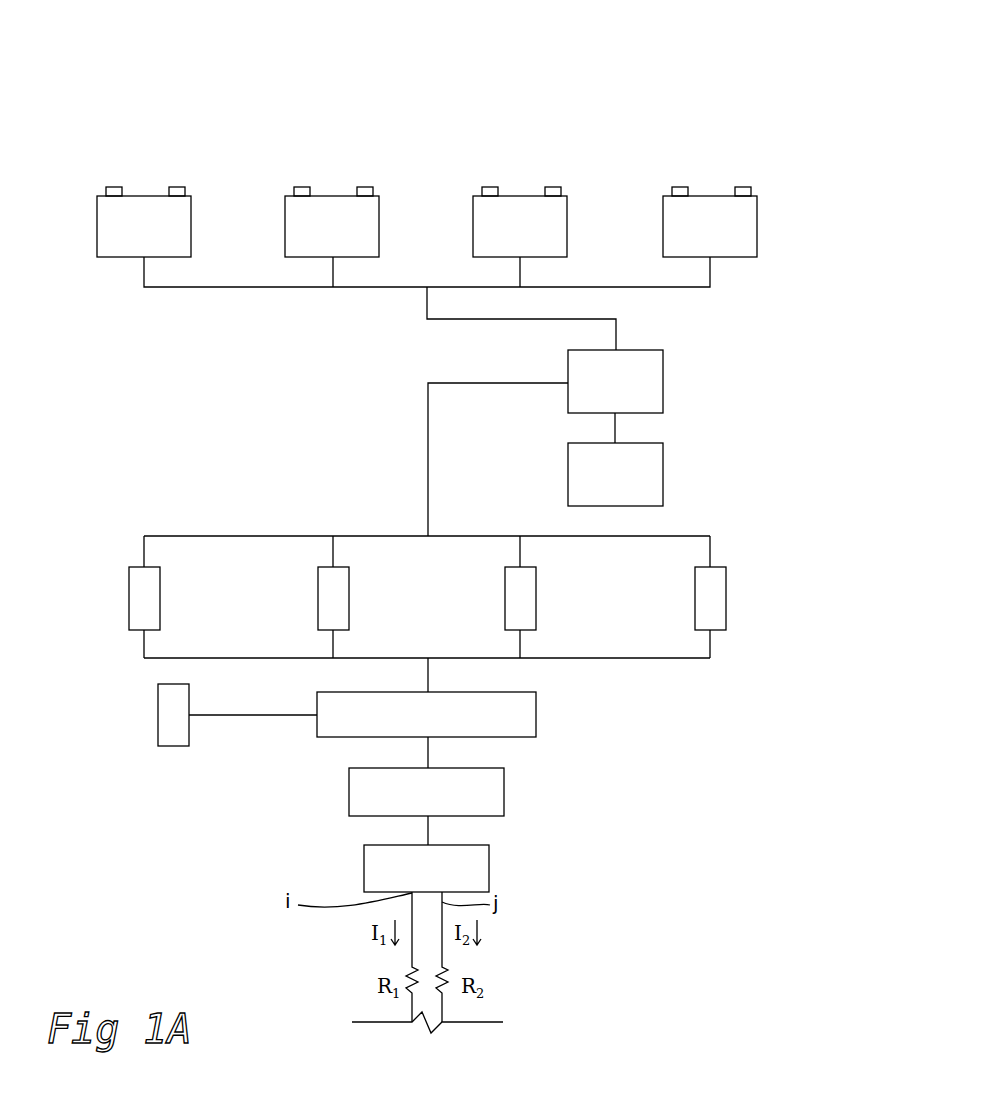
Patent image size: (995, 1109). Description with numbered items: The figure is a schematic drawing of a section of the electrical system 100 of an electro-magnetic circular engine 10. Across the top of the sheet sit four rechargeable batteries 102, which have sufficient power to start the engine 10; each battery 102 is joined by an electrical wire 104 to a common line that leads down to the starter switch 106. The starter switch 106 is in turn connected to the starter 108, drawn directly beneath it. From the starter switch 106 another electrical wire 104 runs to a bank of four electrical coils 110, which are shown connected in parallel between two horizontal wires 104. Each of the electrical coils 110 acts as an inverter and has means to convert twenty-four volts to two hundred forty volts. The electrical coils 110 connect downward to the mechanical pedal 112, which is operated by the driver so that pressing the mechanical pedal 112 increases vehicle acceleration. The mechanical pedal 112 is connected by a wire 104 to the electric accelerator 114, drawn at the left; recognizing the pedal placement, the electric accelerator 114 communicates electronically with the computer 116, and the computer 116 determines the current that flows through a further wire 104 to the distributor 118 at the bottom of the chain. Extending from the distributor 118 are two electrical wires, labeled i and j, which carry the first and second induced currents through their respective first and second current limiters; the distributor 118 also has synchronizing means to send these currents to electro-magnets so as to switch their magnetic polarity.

The electro-magnetic circular engine 10 is at (187, 89).
The electrical system 100 is at (372, 398).
The rechargeable batteries 102 is at (192, 227).
The electrical wires 104 is at (663, 287).
The starter switch 106 is at (663, 367).
The starter 108 is at (663, 470).
The electrical coils 110 is at (160, 600).
The mechanical pedal 112 is at (536, 710).
The electric accelerator 114 is at (158, 737).
The computer 116 is at (504, 795).
The distributor 118 is at (489, 867).